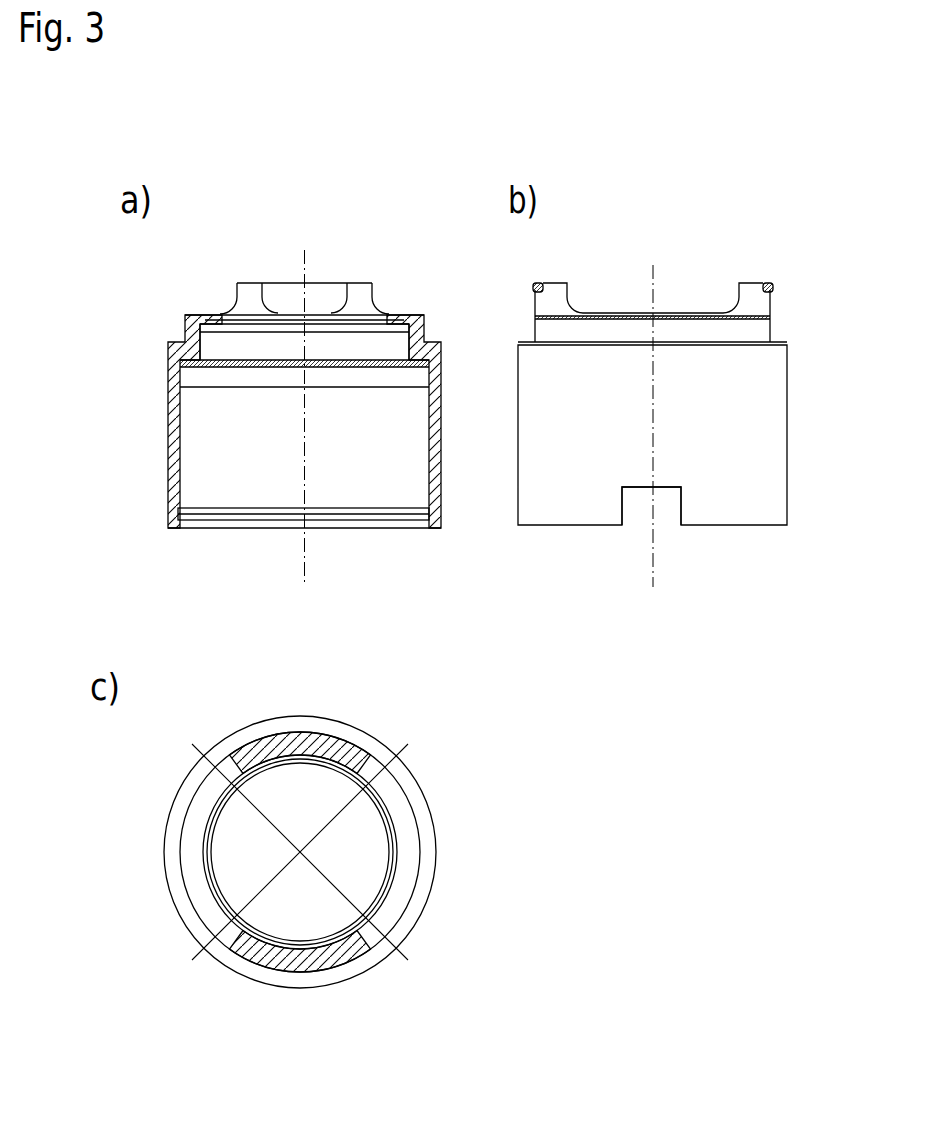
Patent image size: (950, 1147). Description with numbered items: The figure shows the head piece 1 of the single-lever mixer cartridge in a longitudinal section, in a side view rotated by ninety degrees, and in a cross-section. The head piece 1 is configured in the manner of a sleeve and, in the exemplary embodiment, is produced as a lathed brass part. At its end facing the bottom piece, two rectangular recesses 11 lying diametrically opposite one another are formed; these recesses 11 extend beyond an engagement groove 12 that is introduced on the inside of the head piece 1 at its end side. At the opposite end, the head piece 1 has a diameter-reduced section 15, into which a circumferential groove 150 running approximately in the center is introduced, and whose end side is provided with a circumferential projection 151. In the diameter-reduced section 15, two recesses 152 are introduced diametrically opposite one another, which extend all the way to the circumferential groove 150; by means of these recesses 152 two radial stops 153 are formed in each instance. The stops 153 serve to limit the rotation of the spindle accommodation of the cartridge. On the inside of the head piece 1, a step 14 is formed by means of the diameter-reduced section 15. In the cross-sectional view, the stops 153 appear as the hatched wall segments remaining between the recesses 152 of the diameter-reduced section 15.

The head piece 1 is at (168, 397).
The rectangular recesses 11 is at (665, 518).
The engagement groove 12 is at (222, 512).
The step 14 is at (414, 360).
The diameter-reduced section 15 is at (760, 333).
The circumferential groove 150 is at (535, 317).
The circumferential projection 151 is at (773, 285).
The recesses 152 is at (610, 302).
The radial stops 153 is at (722, 298).